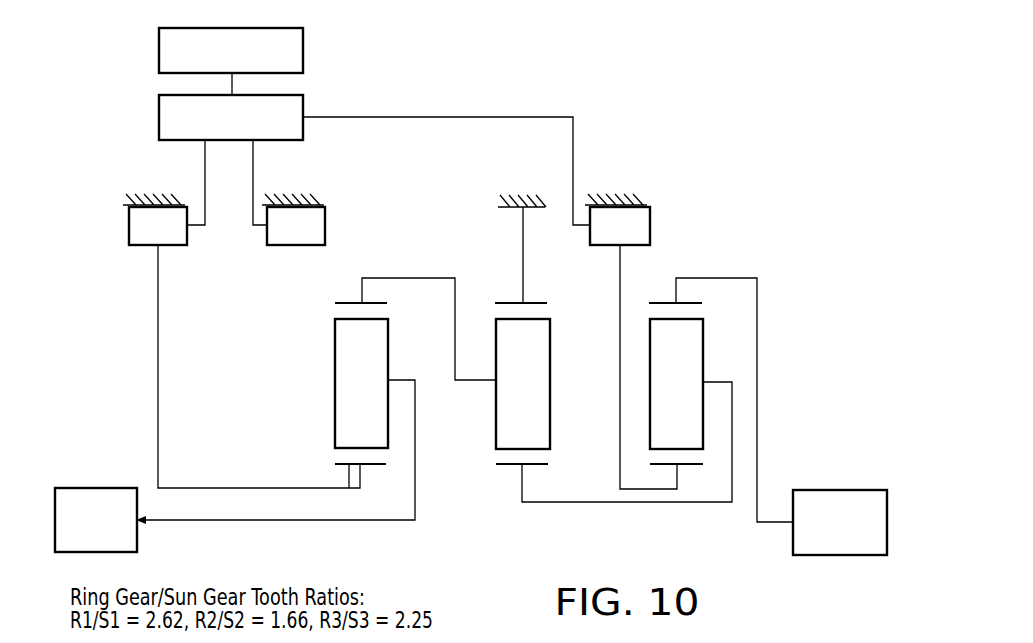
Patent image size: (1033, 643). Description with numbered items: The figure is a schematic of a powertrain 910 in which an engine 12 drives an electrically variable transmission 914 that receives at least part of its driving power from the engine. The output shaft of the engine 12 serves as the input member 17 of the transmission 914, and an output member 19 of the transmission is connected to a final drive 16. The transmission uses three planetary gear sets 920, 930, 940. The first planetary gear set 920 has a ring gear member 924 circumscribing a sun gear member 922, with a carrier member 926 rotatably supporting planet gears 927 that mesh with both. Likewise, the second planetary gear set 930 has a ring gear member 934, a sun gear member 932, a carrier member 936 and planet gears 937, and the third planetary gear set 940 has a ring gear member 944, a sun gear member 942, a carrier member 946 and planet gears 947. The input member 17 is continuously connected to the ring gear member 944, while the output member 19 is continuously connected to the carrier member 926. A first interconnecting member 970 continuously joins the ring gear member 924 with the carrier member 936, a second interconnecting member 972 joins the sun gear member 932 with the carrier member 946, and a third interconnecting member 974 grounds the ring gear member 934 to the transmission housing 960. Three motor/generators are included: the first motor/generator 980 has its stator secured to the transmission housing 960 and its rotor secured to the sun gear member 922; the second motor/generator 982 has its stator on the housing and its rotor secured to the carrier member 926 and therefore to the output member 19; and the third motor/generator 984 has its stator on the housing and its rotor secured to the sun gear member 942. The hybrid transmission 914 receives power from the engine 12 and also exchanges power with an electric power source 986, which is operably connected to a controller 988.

The powertrain 910 is at (753, 118).
The electrically variable transmission 914 is at (792, 158).
The engine 12 is at (823, 482).
The final drive 16 is at (118, 470).
The input member 17 is at (770, 524).
The output member 19 is at (158, 522).
The planetary gear set 920 is at (368, 467).
The sun gear member 922 is at (345, 466).
The ring gear member 924 is at (375, 300).
The carrier member 926 is at (394, 377).
The planet gears 927 is at (361, 383).
The planetary gear set 930 is at (533, 470).
The sun gear member 932 is at (508, 466).
The ring gear member 934 is at (535, 302).
The carrier member 936 is at (490, 390).
The planet gears 937 is at (523, 384).
The planetary gear set 940 is at (690, 468).
The sun gear member 942 is at (660, 466).
The ring gear member 944 is at (685, 300).
The carrier member 946 is at (710, 377).
The planet gears 947 is at (676, 384).
The transmission housing 960 is at (160, 195).
The first interconnecting member 970 is at (420, 278).
The second interconnecting member 972 is at (587, 503).
The third interconnecting member 974 is at (523, 257).
The first motor/generator 980 is at (115, 210).
The second motor/generator 982 is at (338, 212).
The third motor/generator 984 is at (658, 212).
The electric power source 986 is at (303, 52).
The controller 988 is at (303, 106).